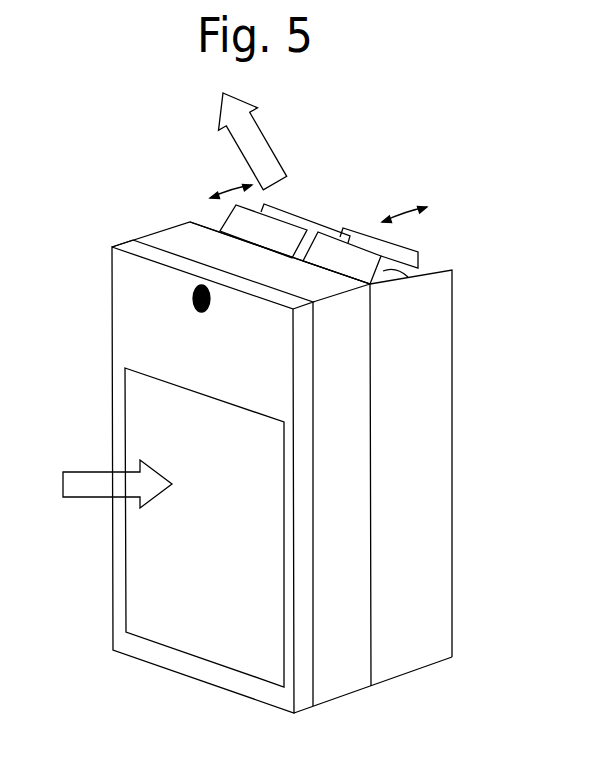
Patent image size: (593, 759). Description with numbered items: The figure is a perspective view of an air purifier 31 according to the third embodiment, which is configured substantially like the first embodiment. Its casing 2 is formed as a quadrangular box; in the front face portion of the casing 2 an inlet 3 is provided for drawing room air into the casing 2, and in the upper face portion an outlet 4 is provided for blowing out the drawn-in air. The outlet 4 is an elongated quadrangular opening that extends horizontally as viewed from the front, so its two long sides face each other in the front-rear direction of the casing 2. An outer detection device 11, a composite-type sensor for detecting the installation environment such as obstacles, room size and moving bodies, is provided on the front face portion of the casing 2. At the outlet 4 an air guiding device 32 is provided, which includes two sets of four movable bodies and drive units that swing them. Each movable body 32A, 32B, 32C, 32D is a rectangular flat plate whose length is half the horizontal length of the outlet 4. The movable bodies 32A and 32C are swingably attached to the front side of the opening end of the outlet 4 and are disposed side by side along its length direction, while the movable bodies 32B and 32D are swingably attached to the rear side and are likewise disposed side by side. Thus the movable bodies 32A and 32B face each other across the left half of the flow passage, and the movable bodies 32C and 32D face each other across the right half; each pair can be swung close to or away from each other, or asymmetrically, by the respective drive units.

The casing 2 is at (148, 330).
The inlet 3 is at (158, 583).
The outlet 4 is at (383, 271).
The outer detection device 11 is at (191, 296).
The air purifier 31 is at (91, 234).
The air guiding device 32 is at (432, 247).
The movable body 32A is at (228, 216).
The movable body 32B is at (300, 210).
The movable body 32C is at (322, 243).
The movable body 32D is at (363, 230).